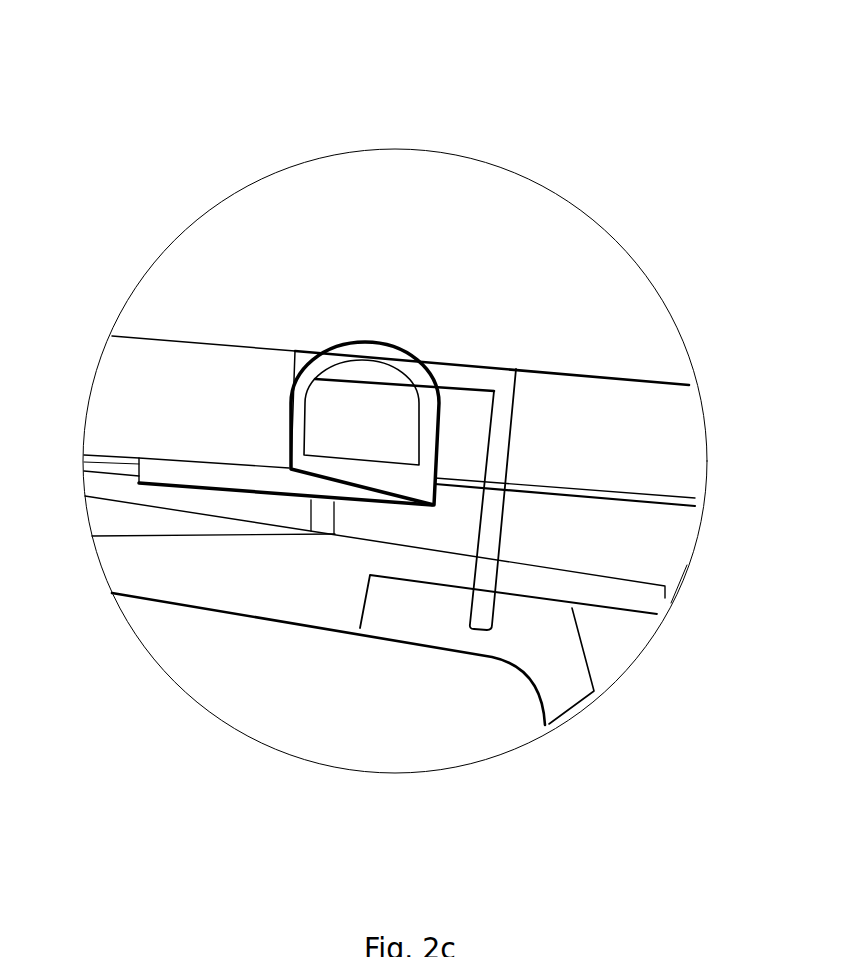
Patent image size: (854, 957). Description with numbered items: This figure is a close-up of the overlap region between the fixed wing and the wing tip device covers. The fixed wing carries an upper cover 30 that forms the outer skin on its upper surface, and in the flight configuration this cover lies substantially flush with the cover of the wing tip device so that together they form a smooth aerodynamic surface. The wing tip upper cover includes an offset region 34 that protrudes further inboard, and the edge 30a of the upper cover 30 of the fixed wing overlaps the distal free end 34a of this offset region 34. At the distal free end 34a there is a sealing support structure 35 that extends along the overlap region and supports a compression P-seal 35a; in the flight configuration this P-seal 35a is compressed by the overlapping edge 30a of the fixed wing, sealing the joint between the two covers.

The upper cover 30 is at (645, 395).
The edge of the upper cover 30a is at (431, 362).
The offset region 34 is at (217, 360).
The distal free end 34a is at (387, 493).
The sealing support structure 35 is at (308, 472).
The compression P-seal 35a is at (415, 472).